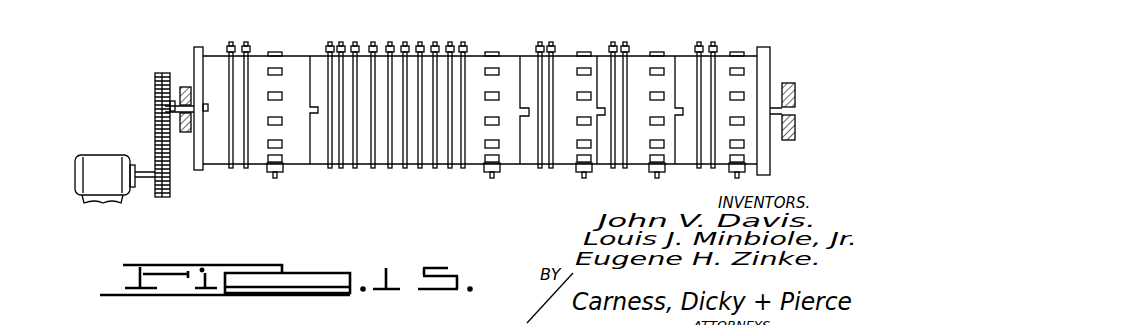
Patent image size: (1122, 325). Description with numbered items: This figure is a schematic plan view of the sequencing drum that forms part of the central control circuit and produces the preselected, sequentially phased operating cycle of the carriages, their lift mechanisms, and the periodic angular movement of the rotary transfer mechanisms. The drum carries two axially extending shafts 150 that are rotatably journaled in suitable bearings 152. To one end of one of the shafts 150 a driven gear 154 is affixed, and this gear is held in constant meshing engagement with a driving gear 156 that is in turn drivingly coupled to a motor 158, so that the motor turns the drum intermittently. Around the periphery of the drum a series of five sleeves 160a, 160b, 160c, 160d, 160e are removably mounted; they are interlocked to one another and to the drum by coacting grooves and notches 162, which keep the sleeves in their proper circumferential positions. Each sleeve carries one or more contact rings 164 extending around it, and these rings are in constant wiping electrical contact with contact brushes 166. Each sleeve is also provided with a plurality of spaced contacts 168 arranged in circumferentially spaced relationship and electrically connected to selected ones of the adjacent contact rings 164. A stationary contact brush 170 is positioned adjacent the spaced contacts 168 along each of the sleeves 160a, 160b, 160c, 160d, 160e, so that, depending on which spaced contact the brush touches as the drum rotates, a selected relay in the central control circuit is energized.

The shaft 150 is at (178, 94).
The bearing 152 is at (173, 118).
The driven gear 154 is at (155, 80).
The driving gear 156 is at (161, 196).
The motor 158 is at (93, 182).
The sleeve 160a is at (301, 57).
The sleeve 160b is at (510, 55).
The sleeve 160c is at (566, 57).
The sleeve 160d is at (670, 57).
The sleeve 160e is at (754, 54).
The coacting grooves and notches 162 is at (203, 108).
The contact ring 164 is at (244, 172).
The contact brush 166 is at (248, 44).
The spaced contact 168 is at (275, 70).
The stationary contact brush 170 is at (276, 180).